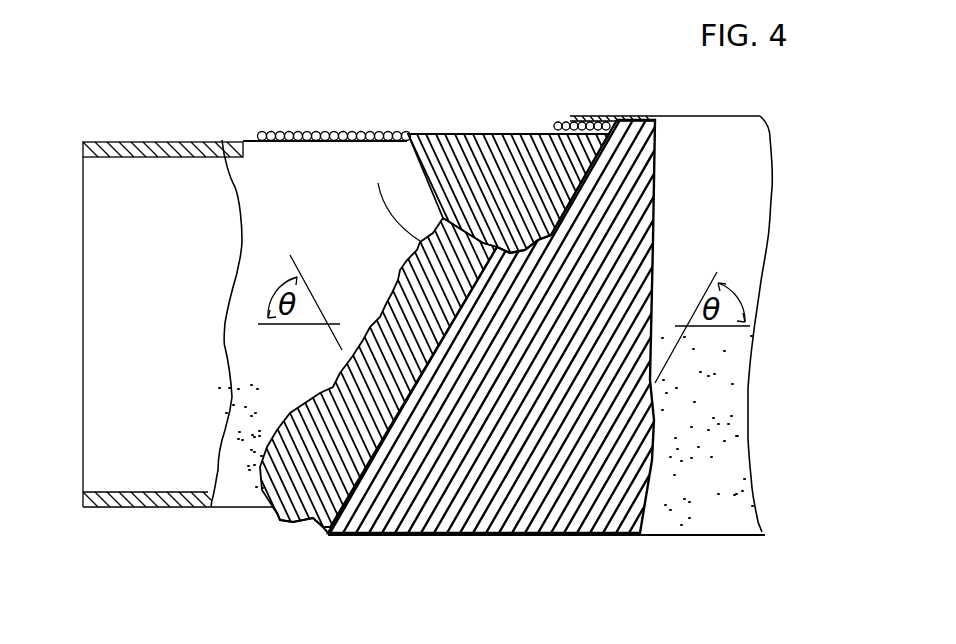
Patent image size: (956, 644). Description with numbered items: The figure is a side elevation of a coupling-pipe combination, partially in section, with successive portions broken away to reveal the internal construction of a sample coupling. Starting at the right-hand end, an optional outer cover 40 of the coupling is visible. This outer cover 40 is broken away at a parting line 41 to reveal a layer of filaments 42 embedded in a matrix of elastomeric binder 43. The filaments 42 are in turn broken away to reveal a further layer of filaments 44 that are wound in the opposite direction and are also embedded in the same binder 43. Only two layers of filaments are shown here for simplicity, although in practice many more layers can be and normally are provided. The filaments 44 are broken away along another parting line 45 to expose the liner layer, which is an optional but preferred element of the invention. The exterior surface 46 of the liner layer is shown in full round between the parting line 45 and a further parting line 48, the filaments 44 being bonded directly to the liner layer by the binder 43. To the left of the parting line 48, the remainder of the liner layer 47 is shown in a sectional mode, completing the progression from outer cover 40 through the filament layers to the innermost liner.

The outer cover 40 is at (743, 138).
The parting line 41 is at (660, 117).
The layer of filaments 42 is at (578, 510).
The elastomeric binder 43 is at (313, 524).
The layer of filaments 44 is at (330, 177).
The parting line 45 is at (378, 183).
The exterior surface of the liner layer 46 is at (293, 167).
The liner layer 47 is at (107, 146).
The parting line 48 is at (222, 140).